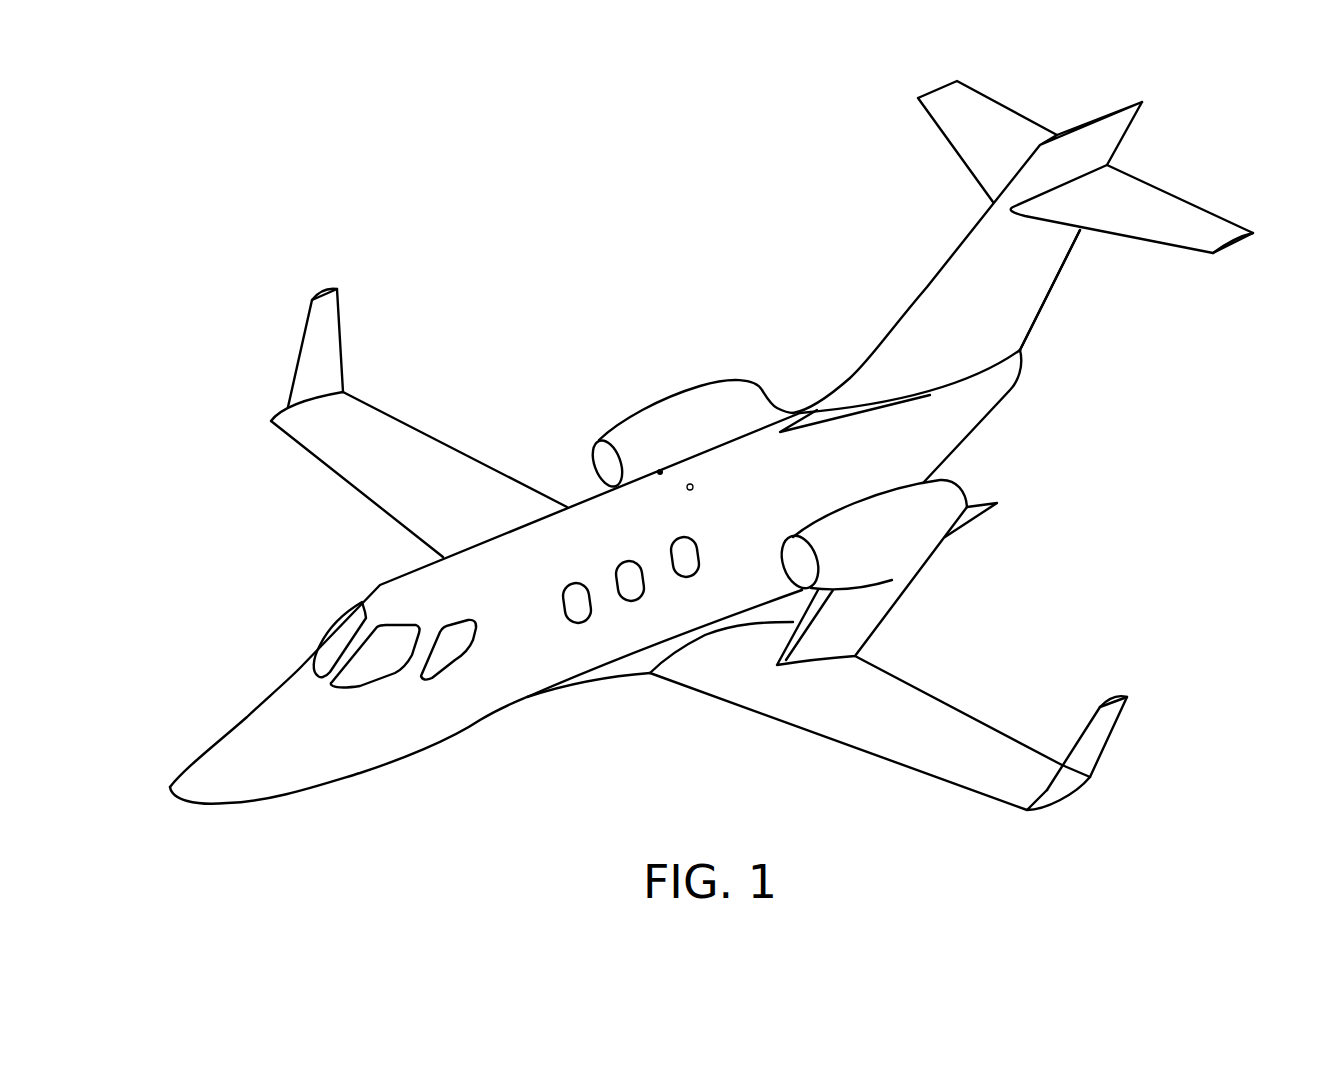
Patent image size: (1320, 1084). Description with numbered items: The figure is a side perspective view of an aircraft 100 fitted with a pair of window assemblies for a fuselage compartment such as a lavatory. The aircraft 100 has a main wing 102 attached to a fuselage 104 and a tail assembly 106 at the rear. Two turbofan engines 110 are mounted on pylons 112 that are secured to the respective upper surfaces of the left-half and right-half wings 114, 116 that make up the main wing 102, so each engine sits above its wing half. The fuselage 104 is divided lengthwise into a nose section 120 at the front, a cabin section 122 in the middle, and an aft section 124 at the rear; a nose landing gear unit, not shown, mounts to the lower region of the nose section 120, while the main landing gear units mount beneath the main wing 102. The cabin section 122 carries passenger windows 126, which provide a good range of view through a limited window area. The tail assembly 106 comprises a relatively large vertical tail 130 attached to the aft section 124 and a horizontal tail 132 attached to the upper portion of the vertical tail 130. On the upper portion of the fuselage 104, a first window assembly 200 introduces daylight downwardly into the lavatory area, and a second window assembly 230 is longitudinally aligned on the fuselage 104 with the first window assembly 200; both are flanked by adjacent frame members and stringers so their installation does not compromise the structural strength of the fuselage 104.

The aircraft 100 is at (579, 272).
The main wing 102 is at (726, 745).
The fuselage 104 is at (526, 573).
The tail assembly 106 is at (1111, 321).
The turbofan engine 110 is at (700, 412).
The pylon 112 is at (870, 617).
The left-half wing 114 is at (848, 732).
The right-half wing 116 is at (432, 453).
The nose section 120 is at (372, 765).
The cabin section 122 is at (615, 622).
The aft section 124 is at (940, 440).
The passenger window 126 is at (570, 583).
The vertical tail 130 is at (945, 283).
The horizontal tail 132 is at (1167, 202).
The first window assembly 200 is at (692, 478).
The second window assembly 230 is at (660, 472).